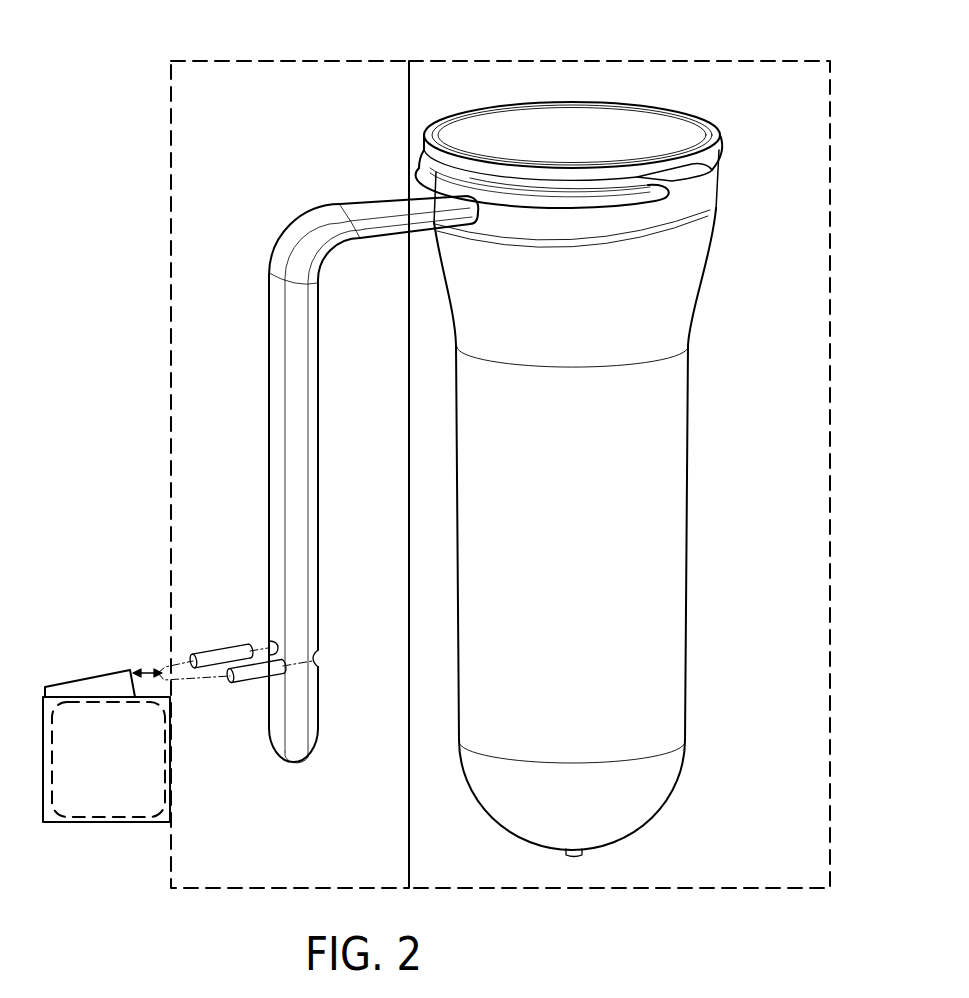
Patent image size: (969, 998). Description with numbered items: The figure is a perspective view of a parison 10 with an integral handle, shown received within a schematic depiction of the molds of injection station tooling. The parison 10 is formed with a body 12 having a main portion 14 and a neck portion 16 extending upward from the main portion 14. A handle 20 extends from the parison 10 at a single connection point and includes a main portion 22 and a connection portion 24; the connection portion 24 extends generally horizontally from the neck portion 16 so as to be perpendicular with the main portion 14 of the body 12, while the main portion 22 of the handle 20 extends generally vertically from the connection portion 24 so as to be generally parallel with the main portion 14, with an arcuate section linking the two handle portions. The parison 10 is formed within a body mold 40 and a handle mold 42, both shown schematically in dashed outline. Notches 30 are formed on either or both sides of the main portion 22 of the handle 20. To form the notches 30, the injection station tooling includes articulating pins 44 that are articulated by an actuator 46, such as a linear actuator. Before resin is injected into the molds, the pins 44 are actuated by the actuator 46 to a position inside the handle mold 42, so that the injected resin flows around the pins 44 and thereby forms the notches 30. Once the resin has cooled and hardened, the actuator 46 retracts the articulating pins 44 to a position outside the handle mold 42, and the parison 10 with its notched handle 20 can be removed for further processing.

The parison 10 is at (623, 462).
The body 12 is at (632, 503).
The main portion 14 is at (672, 537).
The neck portion 16 is at (700, 185).
The handle 20 is at (329, 442).
The main portion 22 is at (283, 462).
The connection portion 24 is at (356, 210).
The notches 30 is at (266, 647).
The body mold 40 is at (625, 62).
The handle mold 42 is at (292, 62).
The articulating pins 44 is at (250, 666).
The actuator 46 is at (92, 685).